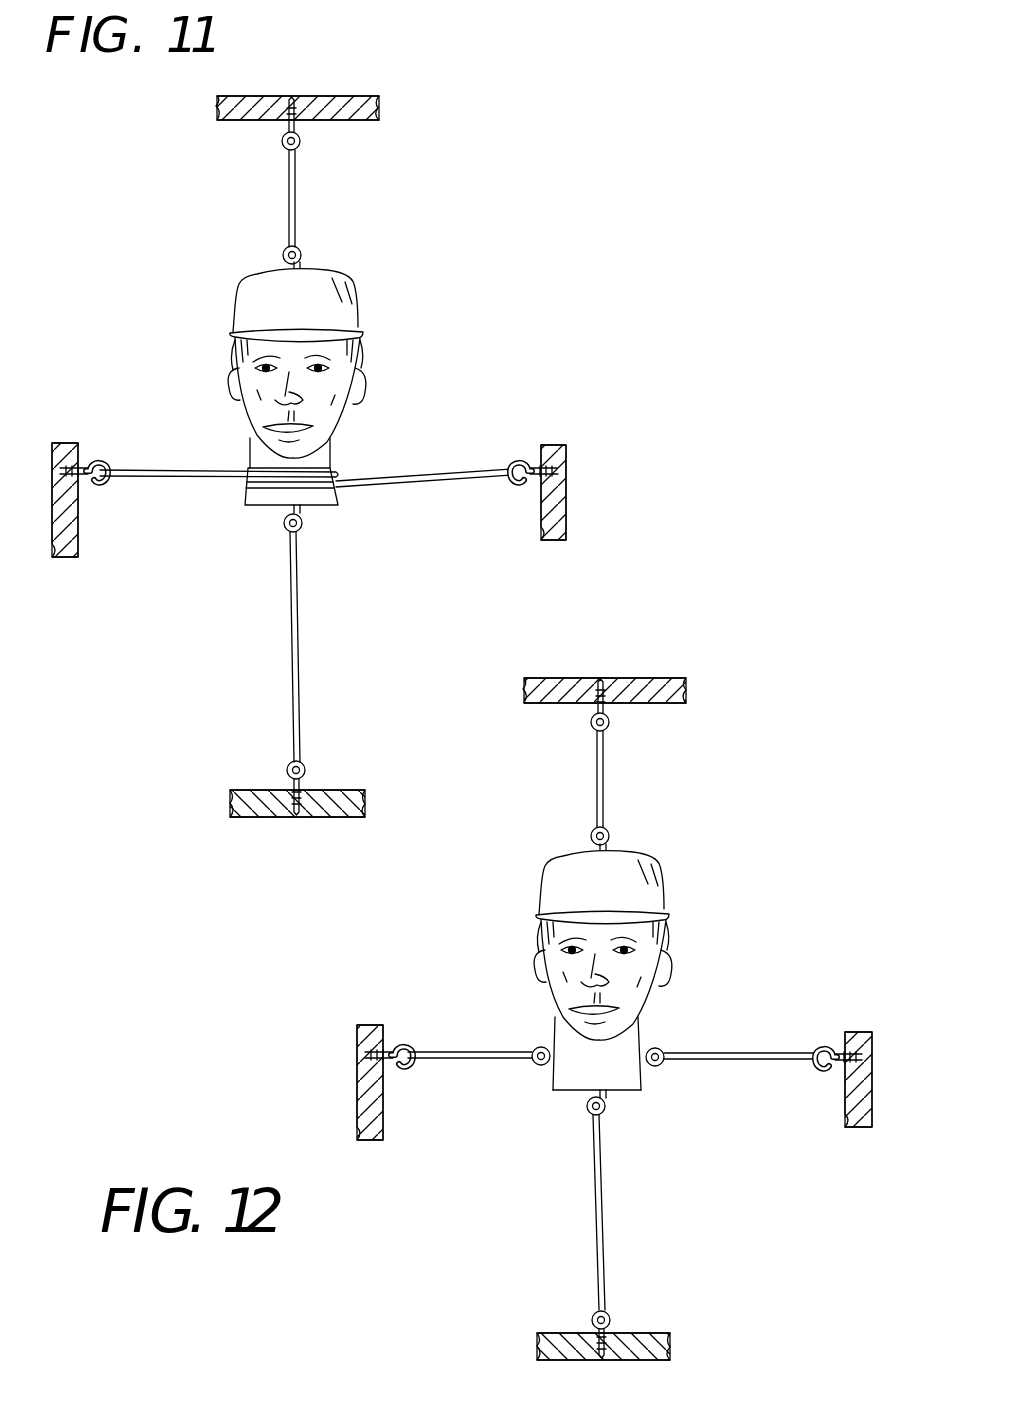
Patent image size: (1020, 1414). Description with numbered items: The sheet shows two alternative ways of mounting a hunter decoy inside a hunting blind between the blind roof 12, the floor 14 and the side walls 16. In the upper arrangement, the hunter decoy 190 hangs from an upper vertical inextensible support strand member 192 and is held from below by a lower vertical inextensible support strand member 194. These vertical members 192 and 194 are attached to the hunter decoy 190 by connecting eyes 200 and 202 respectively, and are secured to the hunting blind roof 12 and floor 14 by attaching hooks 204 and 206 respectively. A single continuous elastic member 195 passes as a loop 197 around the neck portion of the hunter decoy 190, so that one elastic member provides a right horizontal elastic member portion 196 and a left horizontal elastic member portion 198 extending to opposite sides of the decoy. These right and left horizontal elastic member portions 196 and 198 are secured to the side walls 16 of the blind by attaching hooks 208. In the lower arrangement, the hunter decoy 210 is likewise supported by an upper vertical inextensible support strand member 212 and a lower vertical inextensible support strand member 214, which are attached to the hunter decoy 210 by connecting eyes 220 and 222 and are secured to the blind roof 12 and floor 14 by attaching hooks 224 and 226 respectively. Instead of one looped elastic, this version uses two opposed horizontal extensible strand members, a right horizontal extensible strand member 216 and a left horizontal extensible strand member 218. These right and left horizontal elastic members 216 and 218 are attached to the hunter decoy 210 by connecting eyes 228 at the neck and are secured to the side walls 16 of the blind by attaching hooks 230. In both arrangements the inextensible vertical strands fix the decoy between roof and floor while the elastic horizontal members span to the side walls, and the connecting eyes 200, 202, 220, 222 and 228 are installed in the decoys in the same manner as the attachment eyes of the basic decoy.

In FIG. 11, the hunting blind roof 12 is at (340, 96).
In FIG. 12, the hunting blind roof 12 is at (640, 678).
In FIG. 11, the floor 14 is at (352, 790).
In FIG. 12, the floor 14 is at (648, 1333).
In FIG. 11, the side walls 16 is at (74, 444).
In FIG. 12, the side walls 16 is at (380, 1025).
In FIG. 11, the hunter decoy 190 is at (414, 318).
In FIG. 11, the upper vertical inextensible support strand member 192 is at (288, 204).
In FIG. 11, the lower vertical inextensible support strand member 194 is at (299, 657).
In FIG. 11, the continuous elastic member 195 is at (222, 518).
In FIG. 11, the right horizontal elastic member portion 196 is at (207, 468).
In FIG. 11, the loop 197 is at (332, 463).
In FIG. 11, the left horizontal elastic member portion 198 is at (410, 492).
In FIG. 11, the connecting eye 200 is at (302, 252).
In FIG. 11, the connecting eye 202 is at (300, 530).
In FIG. 11, the attaching hook 204 is at (305, 137).
In FIG. 11, the attaching hook 206 is at (305, 770).
In FIG. 11, the attaching hooks 208 is at (104, 486).
In FIG. 12, the hunter decoy 210 is at (757, 866).
In FIG. 12, the upper vertical inextensible support strand member 212 is at (605, 767).
In FIG. 12, the lower vertical inextensible support strand member 214 is at (602, 1200).
In FIG. 12, the right horizontal extensible strand member 216 is at (463, 1065).
In FIG. 12, the left horizontal extensible strand member 218 is at (712, 1068).
In FIG. 12, the connecting eye 220 is at (611, 838).
In FIG. 12, the connecting eye 222 is at (586, 1108).
In FIG. 12, the attaching hook 224 is at (612, 722).
In FIG. 12, the attaching hook 226 is at (611, 1318).
In FIG. 12, the connecting eyes 228 is at (532, 1050).
In FIG. 12, the attaching hooks 230 is at (401, 1045).